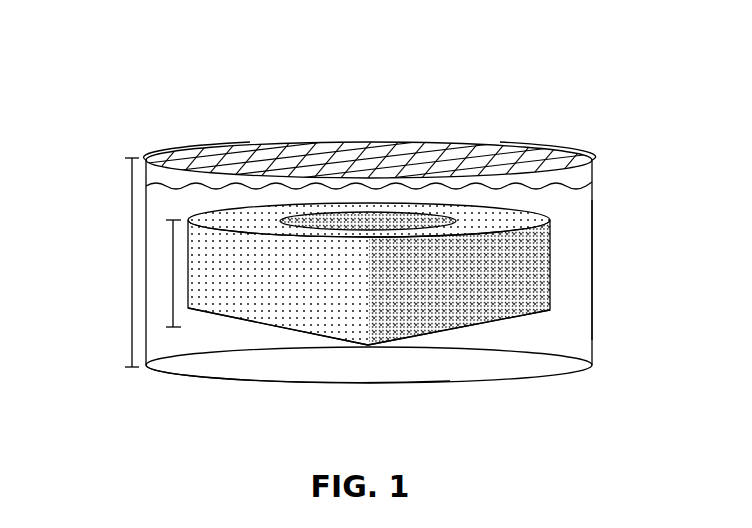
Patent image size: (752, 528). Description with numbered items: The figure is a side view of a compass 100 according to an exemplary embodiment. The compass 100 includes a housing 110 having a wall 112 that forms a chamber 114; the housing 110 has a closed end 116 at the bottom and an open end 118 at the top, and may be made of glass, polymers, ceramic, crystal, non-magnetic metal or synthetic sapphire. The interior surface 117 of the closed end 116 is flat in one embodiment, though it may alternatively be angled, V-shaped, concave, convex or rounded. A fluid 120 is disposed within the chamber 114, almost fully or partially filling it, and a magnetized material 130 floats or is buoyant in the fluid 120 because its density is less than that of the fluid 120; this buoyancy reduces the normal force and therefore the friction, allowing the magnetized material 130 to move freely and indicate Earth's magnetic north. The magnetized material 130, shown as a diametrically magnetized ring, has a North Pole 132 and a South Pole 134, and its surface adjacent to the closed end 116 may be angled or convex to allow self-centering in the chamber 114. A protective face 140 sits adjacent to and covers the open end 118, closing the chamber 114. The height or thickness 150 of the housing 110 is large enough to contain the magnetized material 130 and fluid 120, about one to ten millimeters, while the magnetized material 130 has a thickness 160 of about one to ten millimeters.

The compass 100 is at (593, 79).
The housing 110 is at (584, 371).
The wall 112 is at (593, 325).
The chamber 114 is at (584, 162).
The closed end 116 is at (187, 379).
The interior surface 117 is at (364, 357).
The open end 118 is at (180, 147).
The fluid 120 is at (574, 232).
The magnetized material 130 is at (554, 277).
The North Pole 132 is at (433, 218).
The South Pole 134 is at (338, 220).
The protective face 140 is at (237, 142).
The height or thickness of housing 150 is at (131, 249).
The thickness of magnetized material 160 is at (172, 280).